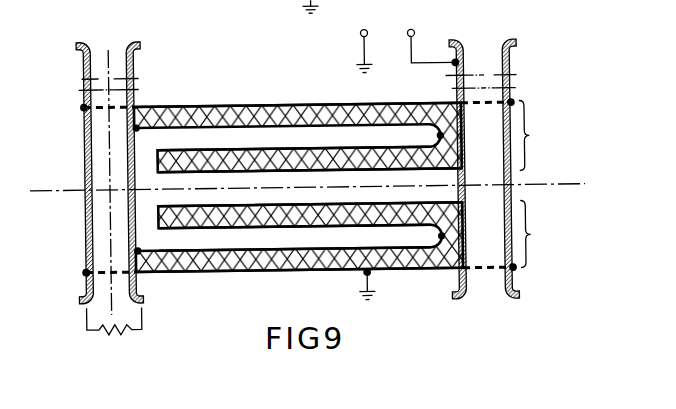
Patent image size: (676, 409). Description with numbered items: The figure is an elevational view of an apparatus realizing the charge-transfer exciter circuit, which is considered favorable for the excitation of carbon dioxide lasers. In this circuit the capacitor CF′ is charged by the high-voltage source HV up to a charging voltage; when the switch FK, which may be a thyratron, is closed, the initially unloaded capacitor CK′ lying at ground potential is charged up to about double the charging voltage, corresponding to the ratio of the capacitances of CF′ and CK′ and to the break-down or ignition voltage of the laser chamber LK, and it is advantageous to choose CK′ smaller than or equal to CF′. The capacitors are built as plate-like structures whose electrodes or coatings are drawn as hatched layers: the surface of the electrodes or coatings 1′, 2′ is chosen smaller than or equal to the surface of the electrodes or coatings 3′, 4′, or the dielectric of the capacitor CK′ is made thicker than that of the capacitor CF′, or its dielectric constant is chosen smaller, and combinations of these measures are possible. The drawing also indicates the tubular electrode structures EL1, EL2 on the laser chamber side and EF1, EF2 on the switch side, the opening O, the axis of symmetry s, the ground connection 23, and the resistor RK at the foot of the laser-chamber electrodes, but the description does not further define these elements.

The electrode or coating 1′ is at (213, 104).
The electrode or coating 2′ is at (250, 104).
The electrode or coating 3′ is at (288, 148).
The electrode or coating 4′ is at (314, 148).
The grounded electrode connection 23 is at (423, 270).
The laser chamber LK is at (105, 163).
The opening / axis of electrode tube O is at (112, 50).
The first cathode tube electrode EL1 is at (85, 67).
The second cathode tube electrode EL2 is at (133, 65).
The switch FK is at (484, 155).
The first anode tube electrode EF1 is at (449, 169).
The second anode tube electrode EF2 is at (518, 78).
The high-voltage source HV is at (381, 36).
The symmetry axis s is at (48, 187).
The capacitor CK′ is at (255, 259).
The capacitor CF′ is at (312, 215).
The cathode resistor RK is at (107, 332).